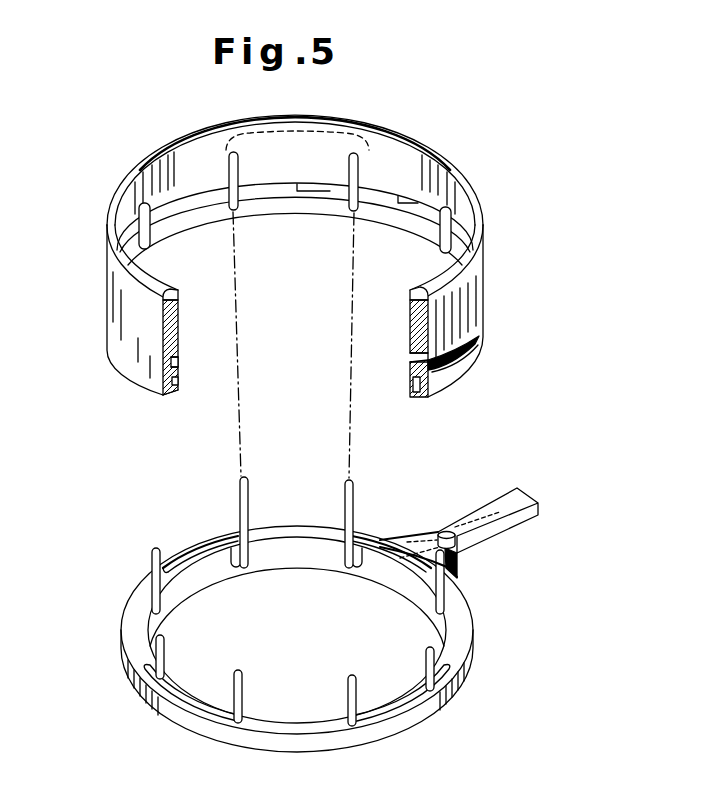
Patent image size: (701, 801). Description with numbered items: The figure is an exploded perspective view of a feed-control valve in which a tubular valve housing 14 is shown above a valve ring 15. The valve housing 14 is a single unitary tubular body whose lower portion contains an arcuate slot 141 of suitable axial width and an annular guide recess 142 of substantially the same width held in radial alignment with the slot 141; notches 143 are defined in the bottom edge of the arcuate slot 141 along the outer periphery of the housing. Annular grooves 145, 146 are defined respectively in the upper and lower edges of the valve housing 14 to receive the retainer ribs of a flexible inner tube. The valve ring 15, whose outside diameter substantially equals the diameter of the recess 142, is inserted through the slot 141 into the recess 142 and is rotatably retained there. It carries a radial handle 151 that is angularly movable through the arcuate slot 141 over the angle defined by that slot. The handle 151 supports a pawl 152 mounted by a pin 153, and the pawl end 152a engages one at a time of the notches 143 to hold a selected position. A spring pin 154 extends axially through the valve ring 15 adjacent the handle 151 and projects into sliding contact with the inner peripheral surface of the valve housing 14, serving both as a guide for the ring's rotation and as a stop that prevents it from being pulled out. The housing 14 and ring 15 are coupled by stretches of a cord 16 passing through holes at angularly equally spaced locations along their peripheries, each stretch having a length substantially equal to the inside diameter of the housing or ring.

The valve housing 14 is at (105, 318).
The arcuate slot 141 is at (421, 355).
The annular guide recess 142 is at (270, 188).
The notches 143 is at (470, 351).
The annular groove 145 is at (156, 292).
The annular groove 146 is at (175, 391).
The valve ring 15 is at (127, 635).
The radial handle 151 is at (539, 498).
The pawl 152 is at (478, 558).
The end of pawl 152a is at (413, 537).
The pin 153 is at (444, 531).
The spring pin 154 is at (420, 568).
The cord 16 is at (150, 216).